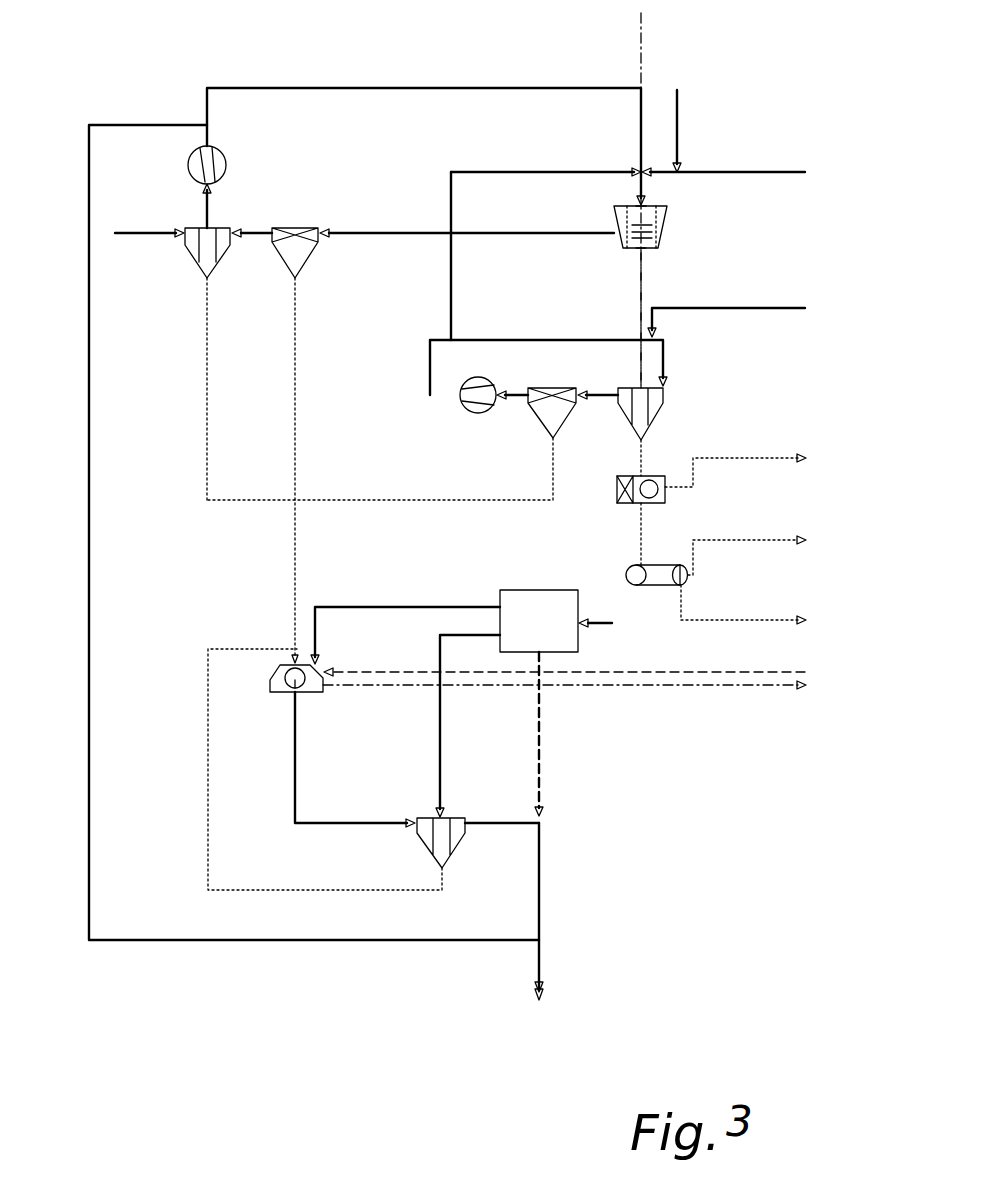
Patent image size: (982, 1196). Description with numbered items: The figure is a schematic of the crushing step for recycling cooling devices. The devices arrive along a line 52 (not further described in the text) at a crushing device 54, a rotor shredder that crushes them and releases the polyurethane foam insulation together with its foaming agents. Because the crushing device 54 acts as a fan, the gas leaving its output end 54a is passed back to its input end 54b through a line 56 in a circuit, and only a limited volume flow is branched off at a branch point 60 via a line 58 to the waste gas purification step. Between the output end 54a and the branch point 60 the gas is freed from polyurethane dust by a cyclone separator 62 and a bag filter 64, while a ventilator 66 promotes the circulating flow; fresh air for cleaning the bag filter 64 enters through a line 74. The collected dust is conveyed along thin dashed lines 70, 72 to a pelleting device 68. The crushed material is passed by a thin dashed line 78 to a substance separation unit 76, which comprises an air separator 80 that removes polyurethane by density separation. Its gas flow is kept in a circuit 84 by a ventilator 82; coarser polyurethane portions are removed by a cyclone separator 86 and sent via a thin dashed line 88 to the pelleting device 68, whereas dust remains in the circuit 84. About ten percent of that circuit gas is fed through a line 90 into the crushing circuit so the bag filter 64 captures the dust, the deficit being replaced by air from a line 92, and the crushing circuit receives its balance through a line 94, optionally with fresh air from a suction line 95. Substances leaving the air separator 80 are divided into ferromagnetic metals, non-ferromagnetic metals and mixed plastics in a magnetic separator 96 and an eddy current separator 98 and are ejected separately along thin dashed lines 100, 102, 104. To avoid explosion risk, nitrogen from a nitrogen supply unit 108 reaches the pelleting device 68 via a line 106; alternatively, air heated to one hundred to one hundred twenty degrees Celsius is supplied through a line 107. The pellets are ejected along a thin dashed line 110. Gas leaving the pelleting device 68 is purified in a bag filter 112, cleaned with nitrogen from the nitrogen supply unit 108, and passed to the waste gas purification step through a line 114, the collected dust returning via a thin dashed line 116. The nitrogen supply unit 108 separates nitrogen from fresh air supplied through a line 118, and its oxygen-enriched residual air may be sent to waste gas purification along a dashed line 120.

The first material stream line 52 is at (641, 42).
The crushing device 54 is at (666, 222).
The output end of the crushing device 54a is at (647, 203).
The input end of the crushing device 54b is at (646, 250).
The line 56 is at (535, 236).
The line 58 is at (90, 124).
The branch point 60 is at (205, 125).
The cyclone separator 62 is at (298, 230).
The bag filter 64 is at (218, 233).
The ventilator 66 is at (218, 158).
The pelleting device 68 is at (288, 695).
The thin dashed line 70 is at (295, 348).
The thin dashed line 72 is at (208, 358).
The line 74 is at (146, 236).
The substance separation unit 76 is at (703, 380).
The thin dashed line 78 is at (641, 282).
The air separator 80 is at (661, 400).
The ventilator 82 is at (470, 406).
The circuit 84 is at (592, 395).
The cyclone separator 86 is at (545, 415).
The thin dashed line 88 is at (390, 498).
The line 90 is at (450, 286).
The line 92 is at (752, 308).
The line 94 is at (735, 170).
The suction line 95 is at (680, 115).
The magnetic separator 96 is at (652, 487).
The eddy current separator 98 is at (657, 565).
The thin dashed line 100 is at (739, 459).
The thin dashed line 102 is at (753, 547).
The thin dashed line 104 is at (745, 604).
The line 106 is at (357, 607).
The line 107 is at (564, 660).
The nitrogen supply unit 108 is at (522, 600).
The thin dashed line 110 is at (735, 687).
The bag filter 112 is at (455, 830).
The line 114 is at (545, 963).
The thin dashed line 116 is at (240, 888).
The line 118 is at (620, 626).
The dashed line 120 is at (541, 750).